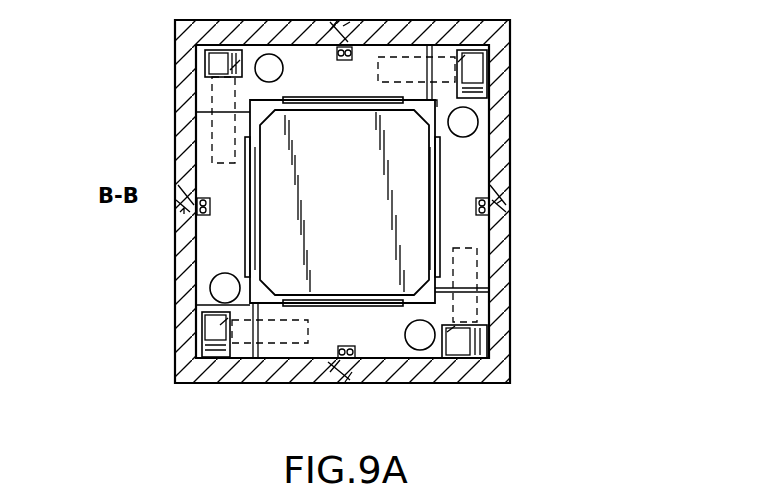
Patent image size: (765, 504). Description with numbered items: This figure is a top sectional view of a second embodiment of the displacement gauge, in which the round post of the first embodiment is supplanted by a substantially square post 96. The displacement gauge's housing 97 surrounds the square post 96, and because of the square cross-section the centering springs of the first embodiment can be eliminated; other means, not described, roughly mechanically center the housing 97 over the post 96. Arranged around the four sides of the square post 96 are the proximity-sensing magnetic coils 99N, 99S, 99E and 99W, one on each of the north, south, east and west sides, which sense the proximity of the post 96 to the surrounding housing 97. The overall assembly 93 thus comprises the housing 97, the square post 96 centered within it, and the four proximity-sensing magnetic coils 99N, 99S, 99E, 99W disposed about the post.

The chip carrier assembly 93 is at (522, 102).
The displacement gauge's housing 97 is at (177, 74).
The substantially square post 96 is at (258, 150).
The proximity-sensing magnetic coil 99N is at (313, 95).
The proximity-sensing magnetic coil 99S is at (350, 308).
The proximity-sensing magnetic coil 99E is at (443, 160).
The proximity-sensing magnetic coil 99W is at (245, 236).